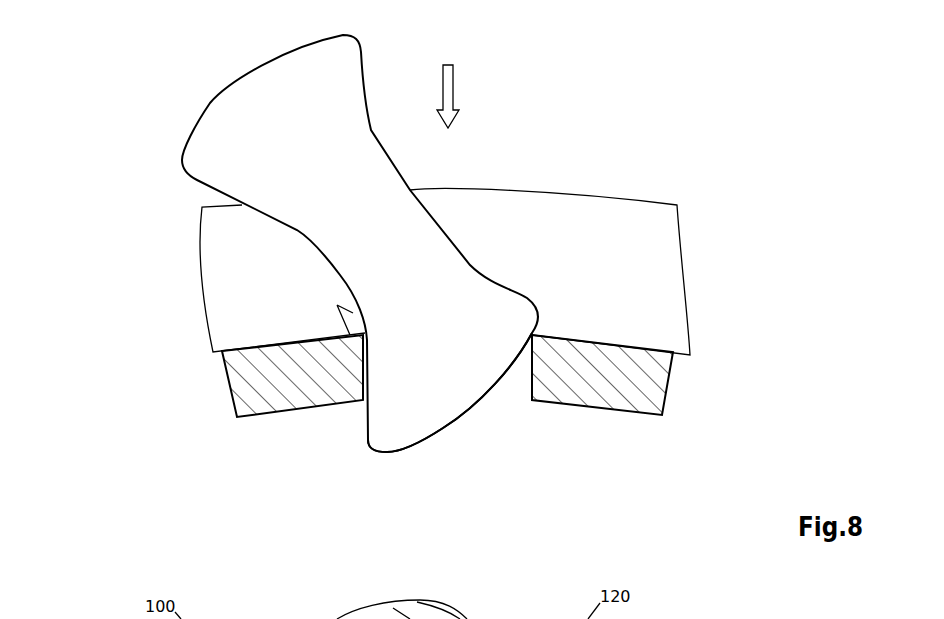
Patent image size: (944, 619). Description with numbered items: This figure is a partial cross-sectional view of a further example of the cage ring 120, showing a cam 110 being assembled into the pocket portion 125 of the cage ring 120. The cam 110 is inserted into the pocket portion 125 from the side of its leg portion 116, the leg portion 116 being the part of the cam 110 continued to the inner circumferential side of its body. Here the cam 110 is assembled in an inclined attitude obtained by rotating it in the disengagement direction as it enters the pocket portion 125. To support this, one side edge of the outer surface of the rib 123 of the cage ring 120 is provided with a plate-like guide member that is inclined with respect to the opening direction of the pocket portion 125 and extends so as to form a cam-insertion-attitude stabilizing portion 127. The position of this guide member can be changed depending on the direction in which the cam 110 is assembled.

The cam 110 is at (194, 113).
The leg portion 116 is at (430, 418).
The cage ring 120 is at (577, 218).
The rib 123 is at (312, 398).
The pocket portion 125 is at (514, 392).
The cam-insertion-attitude stabilizing portion 127 is at (350, 320).